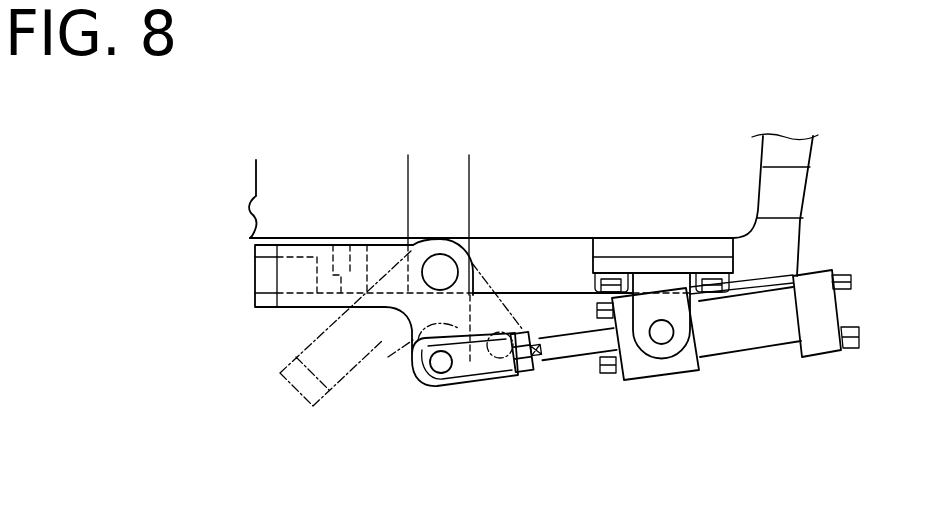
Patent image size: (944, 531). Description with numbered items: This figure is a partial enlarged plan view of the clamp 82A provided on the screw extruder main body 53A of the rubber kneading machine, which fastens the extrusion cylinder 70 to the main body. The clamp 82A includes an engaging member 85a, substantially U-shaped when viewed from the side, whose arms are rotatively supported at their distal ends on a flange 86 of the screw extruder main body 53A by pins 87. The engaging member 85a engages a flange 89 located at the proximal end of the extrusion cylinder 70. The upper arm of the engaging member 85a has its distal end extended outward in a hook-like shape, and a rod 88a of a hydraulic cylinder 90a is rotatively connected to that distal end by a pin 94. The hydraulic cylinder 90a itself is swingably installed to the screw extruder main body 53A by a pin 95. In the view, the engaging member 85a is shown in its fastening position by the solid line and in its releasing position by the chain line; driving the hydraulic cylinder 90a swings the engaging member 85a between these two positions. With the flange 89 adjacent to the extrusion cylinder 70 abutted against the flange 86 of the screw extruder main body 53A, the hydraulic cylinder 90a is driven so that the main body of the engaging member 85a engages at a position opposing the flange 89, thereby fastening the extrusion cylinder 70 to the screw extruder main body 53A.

The extrusion cylinder 70 is at (251, 204).
The screw extruder main body 53A is at (812, 152).
The flange 86 is at (470, 248).
The pins 87 is at (440, 265).
The engaging member 85a is at (255, 282).
The flange 89 is at (384, 255).
The pin 94 is at (497, 350).
The rod 88a is at (572, 350).
The pin 95 is at (662, 327).
The hydraulic cylinder 90a is at (818, 343).
The clamp 82A is at (726, 427).